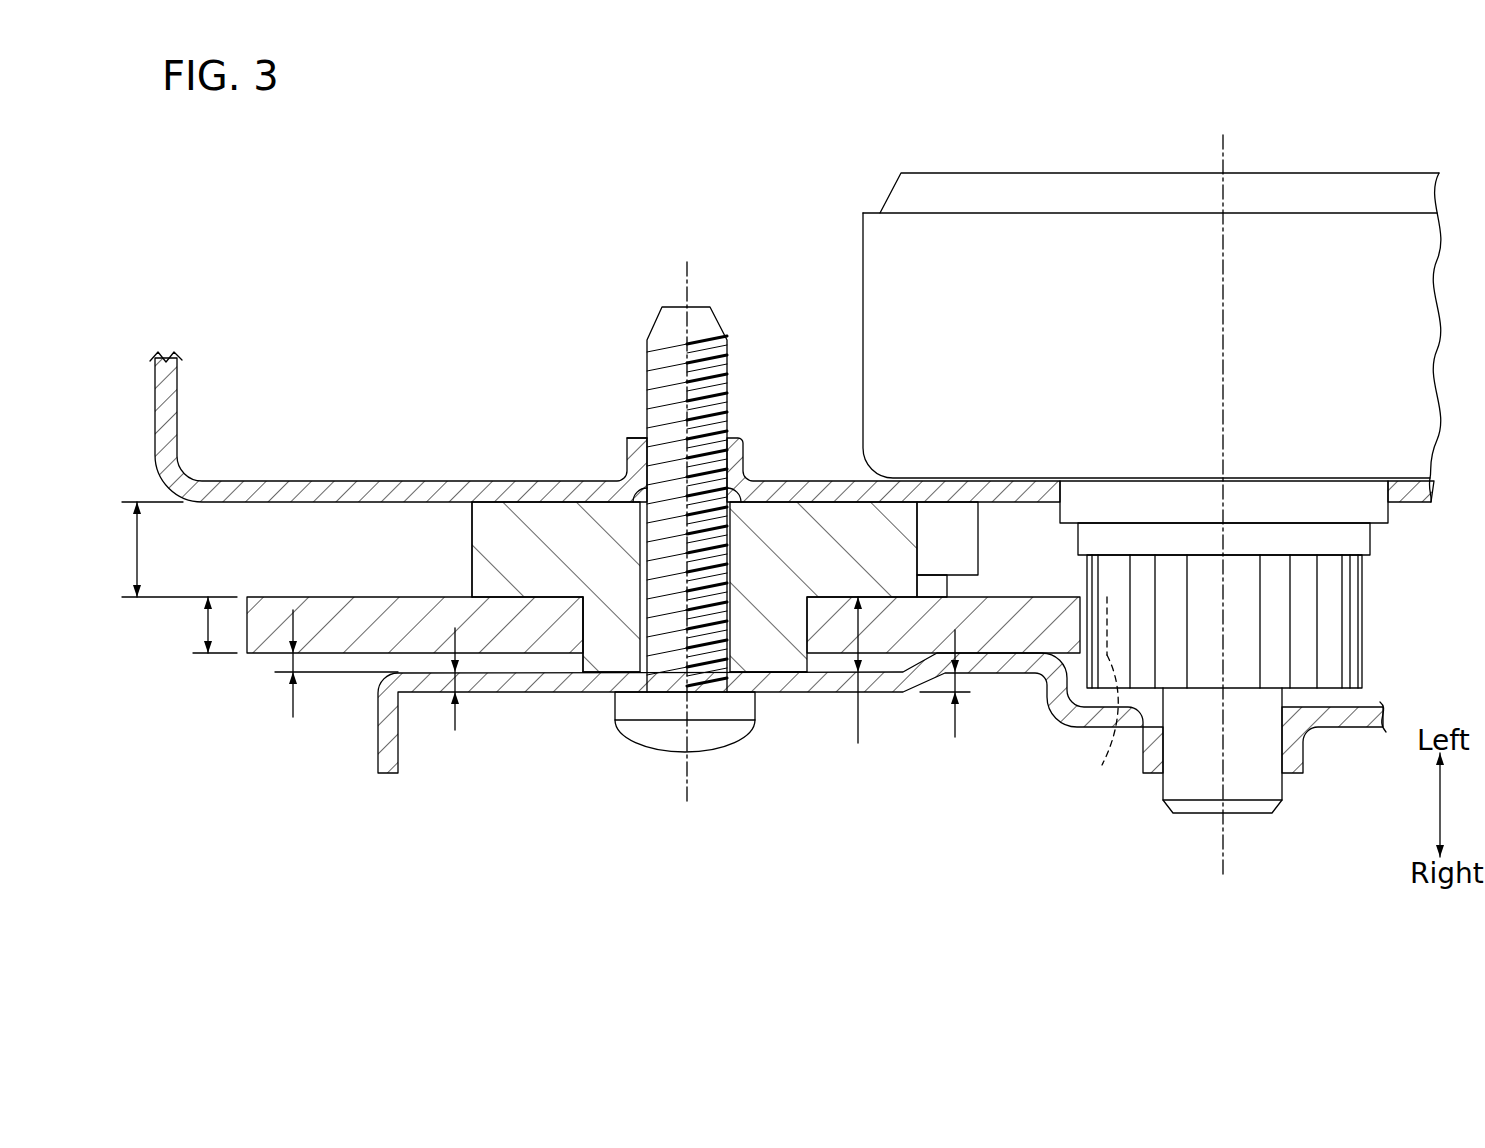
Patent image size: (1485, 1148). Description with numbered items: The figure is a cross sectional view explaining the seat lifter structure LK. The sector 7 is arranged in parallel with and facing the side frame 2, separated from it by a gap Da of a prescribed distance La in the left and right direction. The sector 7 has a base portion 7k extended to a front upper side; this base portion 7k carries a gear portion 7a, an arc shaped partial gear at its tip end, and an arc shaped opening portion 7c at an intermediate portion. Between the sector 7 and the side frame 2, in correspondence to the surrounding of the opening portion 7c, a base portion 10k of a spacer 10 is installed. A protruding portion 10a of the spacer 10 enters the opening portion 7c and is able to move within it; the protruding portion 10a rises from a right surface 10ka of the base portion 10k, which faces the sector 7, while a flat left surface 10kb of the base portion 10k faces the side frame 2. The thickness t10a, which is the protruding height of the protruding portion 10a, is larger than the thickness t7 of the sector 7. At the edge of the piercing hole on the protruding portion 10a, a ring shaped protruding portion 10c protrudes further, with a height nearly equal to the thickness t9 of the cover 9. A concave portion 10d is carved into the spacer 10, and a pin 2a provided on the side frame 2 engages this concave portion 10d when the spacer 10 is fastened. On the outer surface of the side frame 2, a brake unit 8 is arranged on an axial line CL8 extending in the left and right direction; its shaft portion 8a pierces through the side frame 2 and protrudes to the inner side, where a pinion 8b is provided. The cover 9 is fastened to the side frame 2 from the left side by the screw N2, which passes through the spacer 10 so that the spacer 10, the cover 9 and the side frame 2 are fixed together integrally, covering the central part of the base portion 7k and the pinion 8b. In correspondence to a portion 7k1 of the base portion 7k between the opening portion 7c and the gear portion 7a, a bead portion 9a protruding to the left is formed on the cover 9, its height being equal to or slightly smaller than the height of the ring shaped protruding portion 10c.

The side frame 2 is at (360, 481).
The pin 2a is at (960, 543).
The sector 7 is at (268, 656).
The gear portion 7a is at (1107, 655).
The opening portion 7c is at (810, 632).
The base portion 7k is at (898, 653).
The portion 7k1 is at (987, 672).
The brake unit 8 is at (1111, 172).
The shaft portion 8a is at (1198, 815).
The pinion 8b is at (1360, 663).
The cover 9 is at (497, 693).
The bead portion 9a is at (1020, 668).
The spacer 10 is at (497, 522).
The protruding portion 10a is at (822, 628).
The ring shaped protruding portion 10c is at (586, 664).
The concave portion 10d is at (938, 586).
The base portion 10k is at (478, 578).
The right surface 10ka is at (527, 600).
The left surface 10kb is at (567, 497).
The screw N2 is at (648, 737).
The axial line CL8 is at (1223, 848).
The prescribed distance La is at (167, 549).
The gap Da is at (181, 572).
The thickness t7 is at (204, 625).
The thickness t9 is at (457, 697).
The thickness t10a is at (867, 688).
The seat lifter structure LK is at (555, 840).